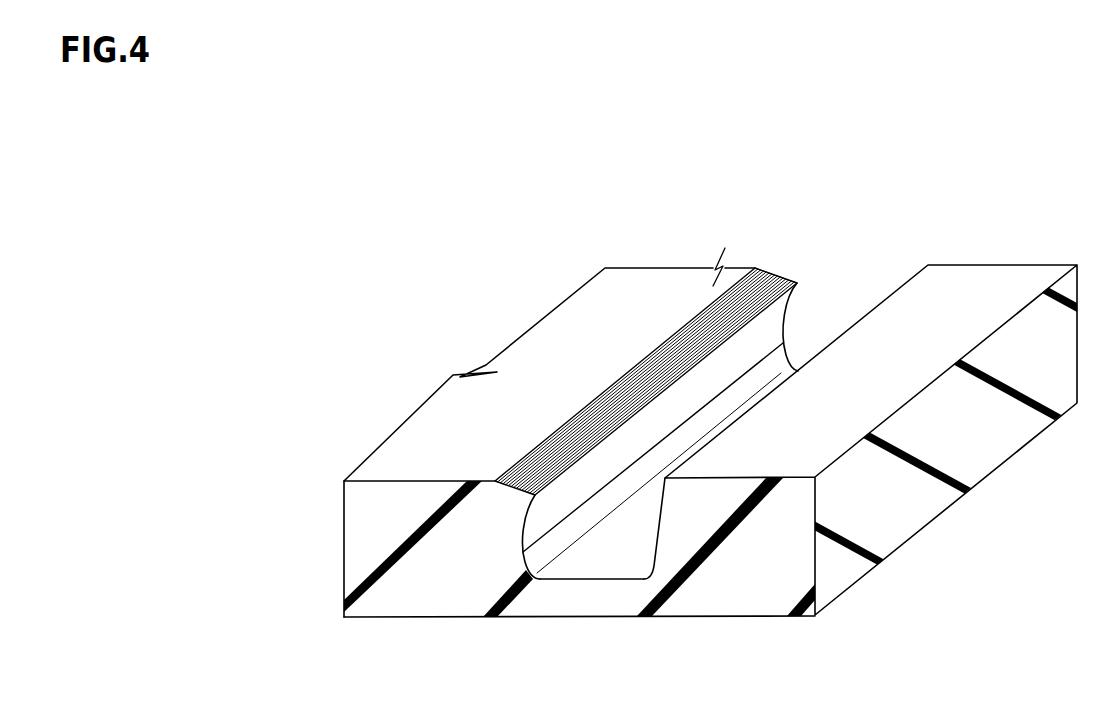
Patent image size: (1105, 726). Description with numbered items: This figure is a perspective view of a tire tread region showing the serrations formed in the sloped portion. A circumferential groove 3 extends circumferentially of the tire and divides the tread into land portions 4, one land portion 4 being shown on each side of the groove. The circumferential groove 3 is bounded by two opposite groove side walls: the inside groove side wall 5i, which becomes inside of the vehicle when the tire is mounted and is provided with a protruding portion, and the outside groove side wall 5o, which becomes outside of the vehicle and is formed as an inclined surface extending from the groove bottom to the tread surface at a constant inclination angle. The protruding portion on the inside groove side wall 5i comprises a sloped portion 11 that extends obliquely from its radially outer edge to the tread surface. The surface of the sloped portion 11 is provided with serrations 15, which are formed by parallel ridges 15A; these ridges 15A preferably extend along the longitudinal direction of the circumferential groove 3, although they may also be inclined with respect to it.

The circumferential groove 3 is at (605, 548).
The land portion 4 is at (435, 442).
The inside groove side wall 5i is at (525, 557).
The outside groove side wall 5o is at (657, 535).
The sloped portion 11 is at (786, 261).
The serrations 15 is at (580, 428).
The ridges 15A is at (642, 365).